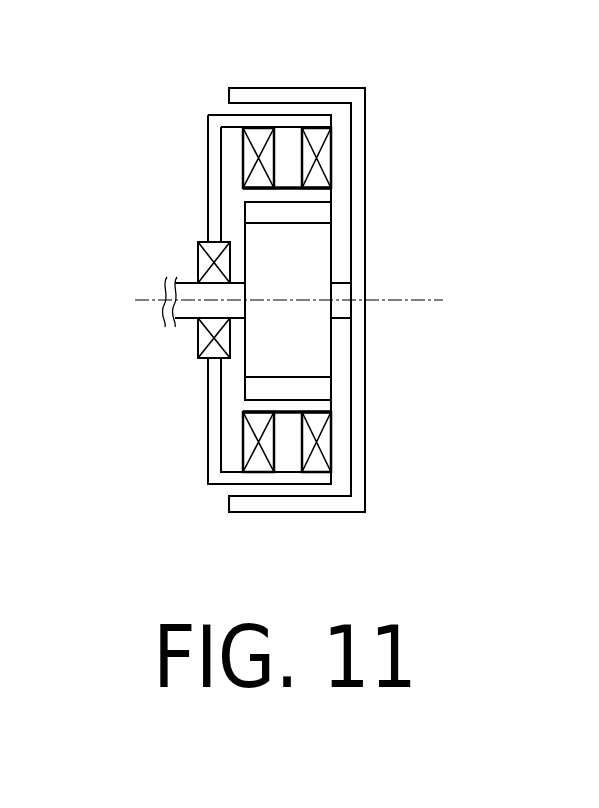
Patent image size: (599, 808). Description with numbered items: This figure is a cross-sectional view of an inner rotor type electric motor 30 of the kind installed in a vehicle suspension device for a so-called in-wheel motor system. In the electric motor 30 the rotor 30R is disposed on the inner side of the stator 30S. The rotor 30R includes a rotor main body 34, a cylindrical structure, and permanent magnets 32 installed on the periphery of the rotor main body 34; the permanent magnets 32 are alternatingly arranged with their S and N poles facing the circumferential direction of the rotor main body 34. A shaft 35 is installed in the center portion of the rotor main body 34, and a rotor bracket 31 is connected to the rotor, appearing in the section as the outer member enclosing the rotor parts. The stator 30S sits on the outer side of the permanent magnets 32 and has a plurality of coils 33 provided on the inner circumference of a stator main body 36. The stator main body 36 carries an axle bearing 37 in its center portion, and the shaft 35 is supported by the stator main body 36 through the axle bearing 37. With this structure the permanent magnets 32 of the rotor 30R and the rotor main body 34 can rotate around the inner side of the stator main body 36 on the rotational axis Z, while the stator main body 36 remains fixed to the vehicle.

The inner rotor type electric motor 30 is at (415, 68).
The rotor 30R is at (450, 123).
The stator 30S is at (112, 112).
The rotor bracket 31 is at (365, 140).
The permanent magnets 32 is at (318, 210).
The coils 33 is at (283, 153).
The rotor main body 34 is at (318, 250).
The shaft 35 is at (187, 292).
The stator main body 36 is at (213, 128).
The axle bearing 37 is at (202, 340).